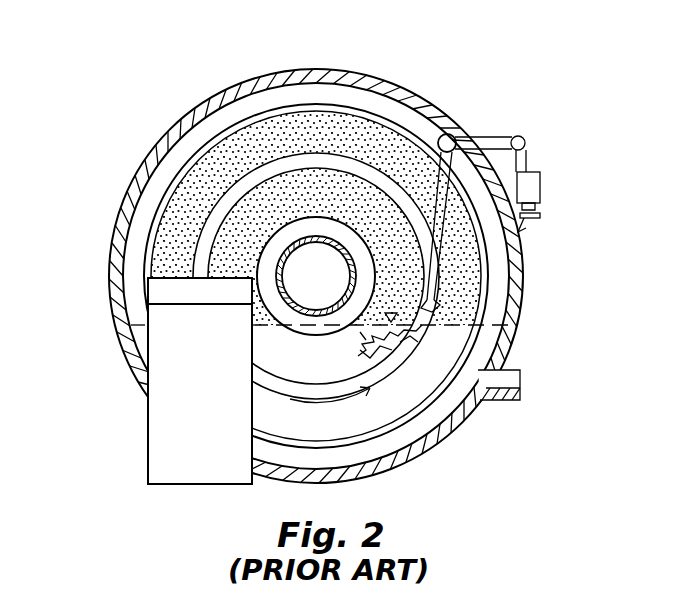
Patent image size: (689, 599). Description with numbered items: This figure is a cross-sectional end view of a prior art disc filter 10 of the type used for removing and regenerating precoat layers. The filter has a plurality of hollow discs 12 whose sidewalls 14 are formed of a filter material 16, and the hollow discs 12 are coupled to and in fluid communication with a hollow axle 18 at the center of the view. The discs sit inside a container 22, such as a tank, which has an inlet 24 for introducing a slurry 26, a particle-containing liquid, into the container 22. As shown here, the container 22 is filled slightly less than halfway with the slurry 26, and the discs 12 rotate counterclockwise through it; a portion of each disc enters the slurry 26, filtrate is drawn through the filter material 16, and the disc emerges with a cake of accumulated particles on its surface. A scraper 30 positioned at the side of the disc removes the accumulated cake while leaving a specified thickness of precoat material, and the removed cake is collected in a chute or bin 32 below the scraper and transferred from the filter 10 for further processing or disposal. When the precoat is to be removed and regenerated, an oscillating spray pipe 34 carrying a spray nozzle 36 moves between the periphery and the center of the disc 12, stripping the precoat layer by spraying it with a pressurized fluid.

The disc filter 10 is at (213, 102).
The hollow disc 12 is at (417, 413).
The sidewall 14 is at (357, 164).
The filter material 16 is at (357, 164).
The hollow axle 18 is at (285, 250).
The container 22 is at (393, 460).
The inlet 24 is at (523, 385).
The slurry 26 is at (468, 338).
The scraper 30 is at (172, 293).
The chute or bin 32 is at (182, 417).
The oscillating spray pipe 34 is at (434, 241).
The spray nozzle 36 is at (438, 298).